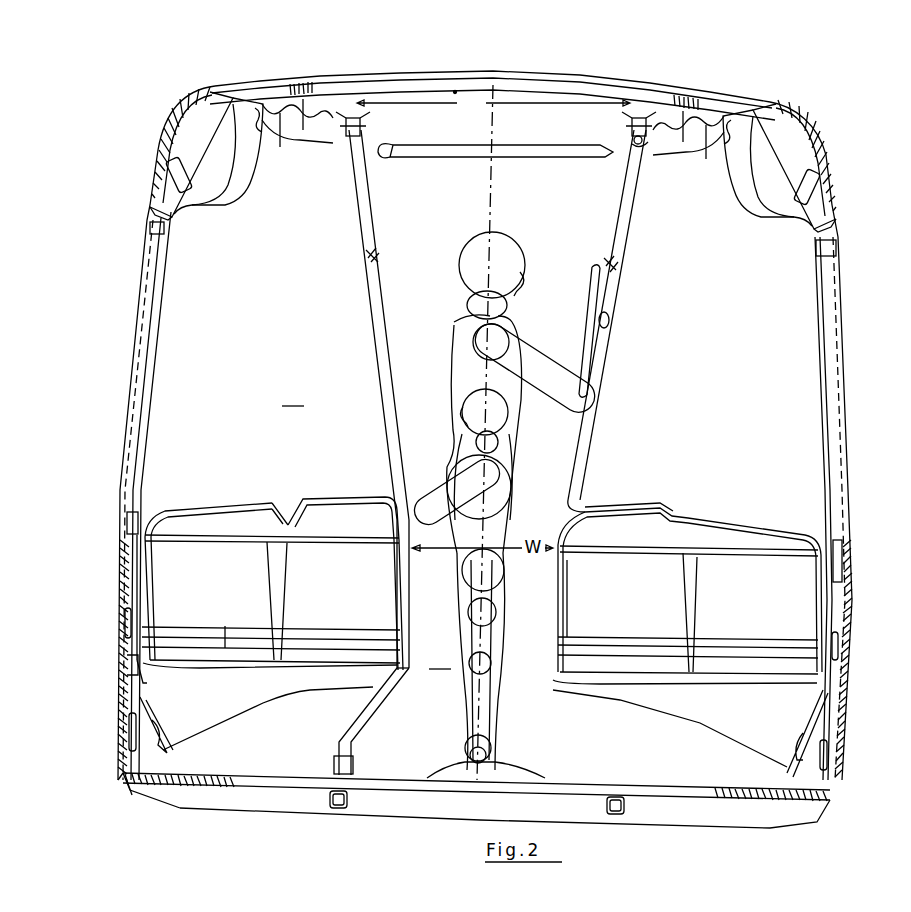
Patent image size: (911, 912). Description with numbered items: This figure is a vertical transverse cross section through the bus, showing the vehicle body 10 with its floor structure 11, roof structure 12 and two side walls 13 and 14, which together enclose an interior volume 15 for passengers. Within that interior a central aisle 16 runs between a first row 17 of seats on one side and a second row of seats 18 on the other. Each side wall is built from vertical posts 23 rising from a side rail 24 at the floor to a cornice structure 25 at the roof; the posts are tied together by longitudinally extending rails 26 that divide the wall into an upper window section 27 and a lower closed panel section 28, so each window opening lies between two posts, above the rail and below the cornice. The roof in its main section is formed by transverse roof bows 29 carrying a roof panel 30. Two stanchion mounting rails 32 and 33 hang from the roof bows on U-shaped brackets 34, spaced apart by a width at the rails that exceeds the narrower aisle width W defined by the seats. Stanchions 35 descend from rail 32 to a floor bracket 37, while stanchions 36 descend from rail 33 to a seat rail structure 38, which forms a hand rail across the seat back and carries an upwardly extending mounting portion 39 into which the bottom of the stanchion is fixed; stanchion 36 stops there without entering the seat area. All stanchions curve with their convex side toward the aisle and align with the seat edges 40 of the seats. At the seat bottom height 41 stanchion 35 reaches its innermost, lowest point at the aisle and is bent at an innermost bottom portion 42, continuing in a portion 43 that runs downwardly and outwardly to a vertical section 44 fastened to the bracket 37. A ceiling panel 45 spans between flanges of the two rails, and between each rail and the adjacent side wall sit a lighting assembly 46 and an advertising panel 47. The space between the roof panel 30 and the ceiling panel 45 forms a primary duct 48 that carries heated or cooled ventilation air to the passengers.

The vehicle body 10 is at (133, 330).
The floor structure 11 is at (278, 778).
The roof structure 12 is at (516, 90).
The side wall 13 is at (127, 425).
The side wall 14 is at (838, 462).
The interior volume 15 is at (441, 501).
The central aisle 16 is at (486, 714).
The first row of seats 17 is at (720, 510).
The second row of seats 18 is at (315, 497).
The vertical posts 23 is at (124, 596).
The side rail 24 is at (128, 790).
The cornice structure 25 is at (169, 160).
The longitudinally extending rails 26 is at (120, 524).
The upper window section 27 is at (160, 348).
The lower closed panel section 28 is at (120, 612).
The transverse roof bows 29 is at (418, 85).
The roof panel 30 is at (576, 97).
The stanchion mounting rail 32 is at (387, 148).
The stanchion mounting rail 33 is at (628, 140).
The U-shaped brackets 34 is at (355, 120).
The stanchion 35 is at (366, 300).
The stanchion 36 is at (606, 222).
The bracket 37 is at (361, 765).
The seat rail structure 38 is at (619, 515).
The mounting portion 39 is at (587, 510).
The seat edge 40 is at (580, 592).
The seat bottom height 41 is at (550, 672).
The innermost bottom portion 42 is at (410, 672).
The portion 43 is at (365, 710).
The vertical section 44 is at (335, 756).
The ceiling panel 45 is at (440, 160).
The lighting assembly 46 is at (282, 136).
The advertising panel 47 is at (246, 152).
The primary duct 48 is at (455, 92).